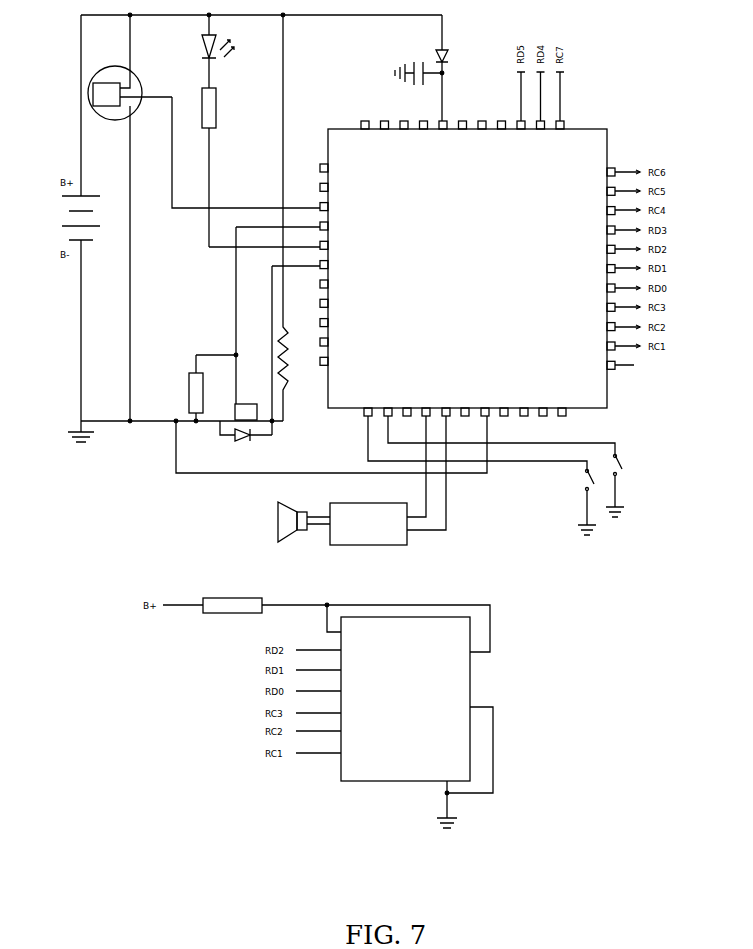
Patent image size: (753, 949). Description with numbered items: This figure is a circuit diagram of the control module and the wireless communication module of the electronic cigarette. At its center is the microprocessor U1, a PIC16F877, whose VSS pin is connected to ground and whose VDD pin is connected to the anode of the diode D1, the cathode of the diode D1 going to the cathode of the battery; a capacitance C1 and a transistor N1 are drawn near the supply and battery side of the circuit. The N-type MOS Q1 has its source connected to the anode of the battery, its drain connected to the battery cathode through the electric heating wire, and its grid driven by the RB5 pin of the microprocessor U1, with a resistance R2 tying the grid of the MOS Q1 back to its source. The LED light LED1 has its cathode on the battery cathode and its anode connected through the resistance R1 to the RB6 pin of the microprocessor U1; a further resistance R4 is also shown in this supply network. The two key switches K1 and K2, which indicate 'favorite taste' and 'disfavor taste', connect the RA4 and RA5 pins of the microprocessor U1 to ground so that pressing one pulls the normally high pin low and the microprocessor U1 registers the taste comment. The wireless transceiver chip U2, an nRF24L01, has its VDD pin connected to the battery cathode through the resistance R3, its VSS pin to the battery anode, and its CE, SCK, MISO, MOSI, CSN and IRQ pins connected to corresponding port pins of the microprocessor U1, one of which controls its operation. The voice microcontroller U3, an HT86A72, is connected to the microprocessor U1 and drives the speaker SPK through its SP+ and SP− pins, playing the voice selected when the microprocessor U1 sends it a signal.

The transistor N1 is at (130, 218).
The LED light LED1 is at (192, 51).
The resistance R1 is at (223, 167).
The resistance R2 is at (206, 388).
The resistance R3 is at (232, 599).
The resistor R4 is at (294, 218).
The diode D1 is at (455, 68).
The capacitor C1 is at (418, 83).
The microprocessor U1 is at (467, 268).
The wireless transceiver chip U2 is at (405, 699).
The voice microcontroller U3 is at (368, 524).
The N-type MOS Q1 is at (246, 442).
The key switch K1 is at (579, 503).
The key switch K2 is at (625, 486).
The speaker SPK is at (284, 522).